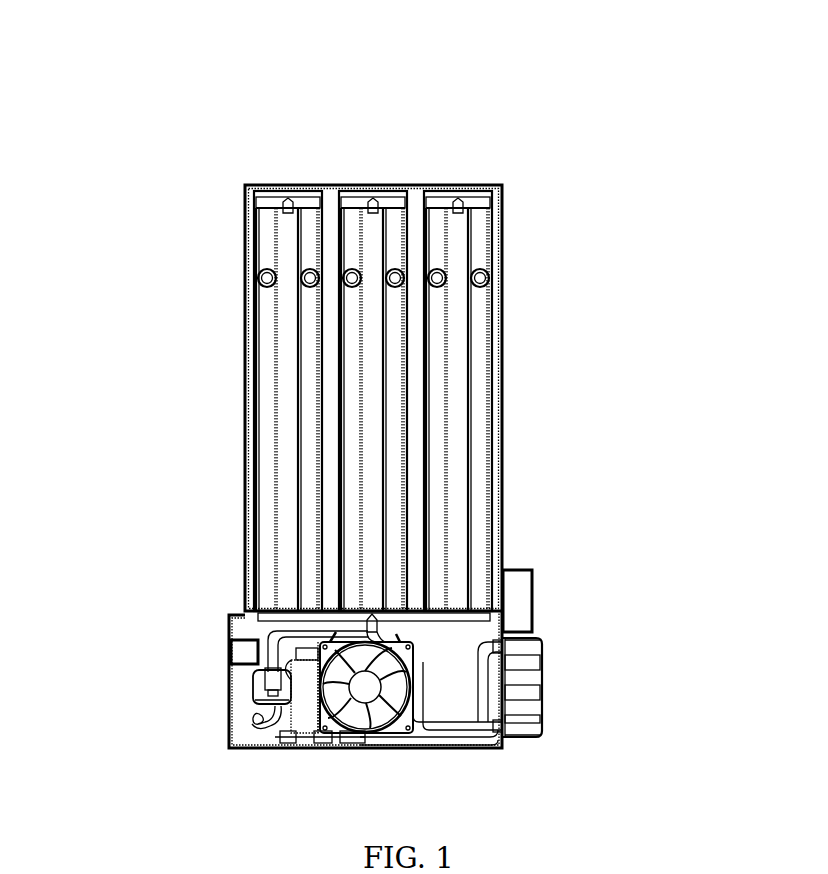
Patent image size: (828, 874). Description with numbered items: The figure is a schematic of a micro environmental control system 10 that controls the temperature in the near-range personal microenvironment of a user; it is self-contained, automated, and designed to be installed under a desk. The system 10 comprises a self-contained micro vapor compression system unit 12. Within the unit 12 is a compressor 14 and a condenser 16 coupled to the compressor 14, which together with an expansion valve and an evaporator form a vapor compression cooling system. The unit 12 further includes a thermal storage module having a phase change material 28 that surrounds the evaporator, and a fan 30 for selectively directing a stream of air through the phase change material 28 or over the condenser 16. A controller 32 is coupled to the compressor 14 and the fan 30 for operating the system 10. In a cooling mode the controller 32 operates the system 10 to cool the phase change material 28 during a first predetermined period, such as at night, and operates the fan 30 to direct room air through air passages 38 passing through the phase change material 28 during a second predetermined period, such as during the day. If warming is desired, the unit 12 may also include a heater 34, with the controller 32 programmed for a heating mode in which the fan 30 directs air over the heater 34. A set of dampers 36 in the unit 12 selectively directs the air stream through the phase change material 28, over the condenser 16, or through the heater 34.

The system 10 is at (310, 92).
The micro vapor compression system unit 12 is at (263, 775).
The compressor 14 is at (308, 720).
The condenser 16 is at (545, 685).
The phase change material 28 is at (485, 431).
The fan 30 is at (328, 684).
The controller 32 is at (230, 645).
The heater 34 is at (533, 583).
The dampers 36 is at (260, 614).
The air passages 38 is at (330, 431).